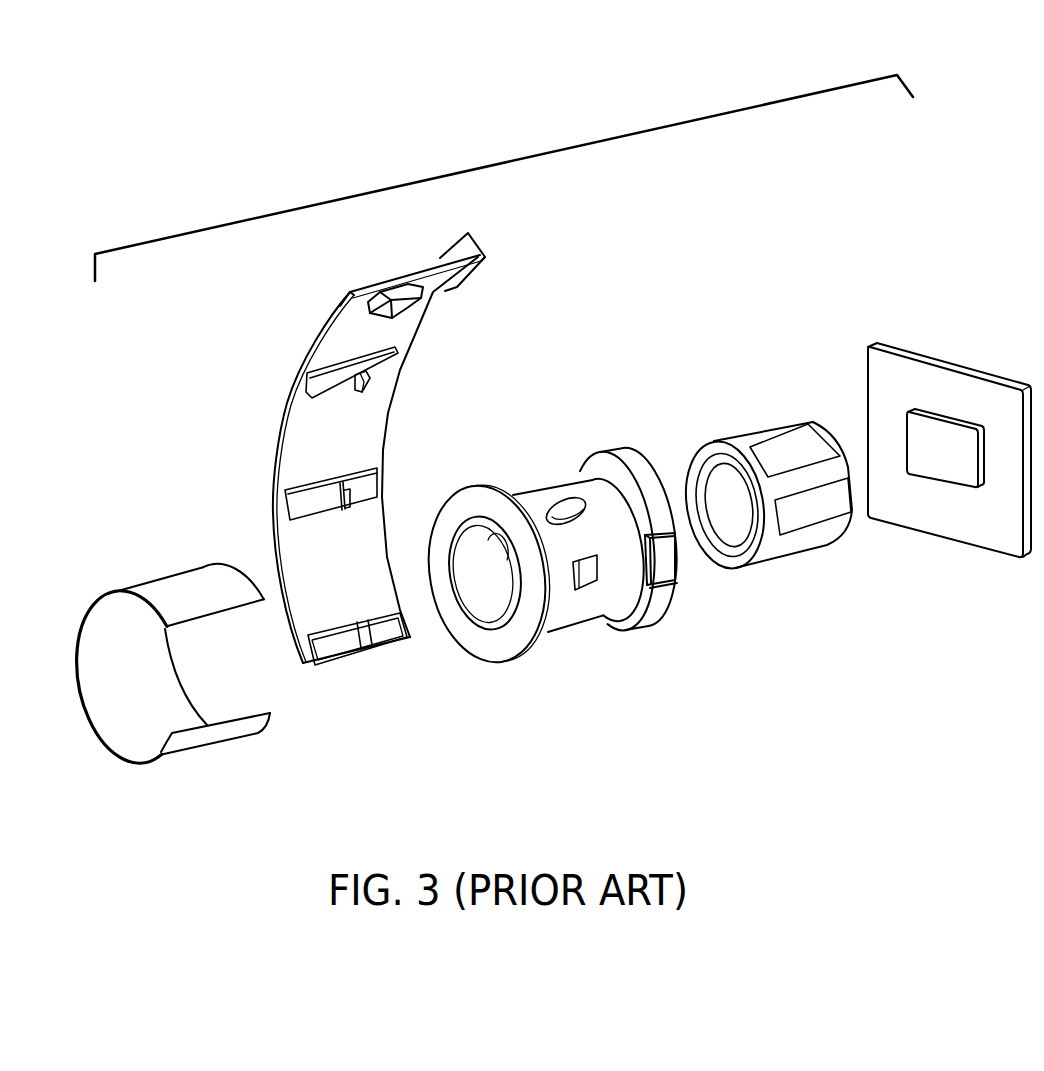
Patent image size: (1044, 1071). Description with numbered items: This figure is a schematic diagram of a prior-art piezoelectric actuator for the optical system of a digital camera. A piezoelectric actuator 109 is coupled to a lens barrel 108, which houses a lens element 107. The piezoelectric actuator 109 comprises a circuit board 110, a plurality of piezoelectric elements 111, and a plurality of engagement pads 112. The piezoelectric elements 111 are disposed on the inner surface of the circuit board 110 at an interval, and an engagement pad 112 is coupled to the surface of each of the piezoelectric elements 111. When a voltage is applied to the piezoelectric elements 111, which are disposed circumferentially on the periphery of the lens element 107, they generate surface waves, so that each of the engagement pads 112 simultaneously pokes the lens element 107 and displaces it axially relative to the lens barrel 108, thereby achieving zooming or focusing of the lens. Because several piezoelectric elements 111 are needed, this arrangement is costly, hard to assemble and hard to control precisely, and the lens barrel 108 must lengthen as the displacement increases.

The lens element 107 is at (737, 438).
The lens barrel 108 is at (552, 607).
The piezoelectric actuator 109 is at (344, 449).
The circuit board 110 is at (353, 443).
The piezoelectric elements 111 is at (381, 367).
The engagement pads 112 is at (357, 386).